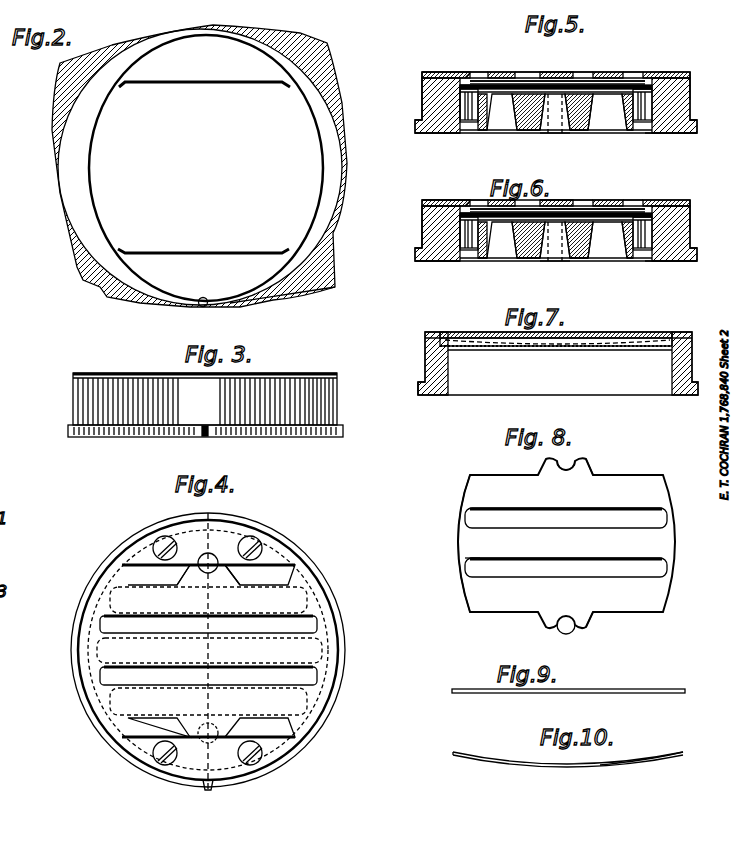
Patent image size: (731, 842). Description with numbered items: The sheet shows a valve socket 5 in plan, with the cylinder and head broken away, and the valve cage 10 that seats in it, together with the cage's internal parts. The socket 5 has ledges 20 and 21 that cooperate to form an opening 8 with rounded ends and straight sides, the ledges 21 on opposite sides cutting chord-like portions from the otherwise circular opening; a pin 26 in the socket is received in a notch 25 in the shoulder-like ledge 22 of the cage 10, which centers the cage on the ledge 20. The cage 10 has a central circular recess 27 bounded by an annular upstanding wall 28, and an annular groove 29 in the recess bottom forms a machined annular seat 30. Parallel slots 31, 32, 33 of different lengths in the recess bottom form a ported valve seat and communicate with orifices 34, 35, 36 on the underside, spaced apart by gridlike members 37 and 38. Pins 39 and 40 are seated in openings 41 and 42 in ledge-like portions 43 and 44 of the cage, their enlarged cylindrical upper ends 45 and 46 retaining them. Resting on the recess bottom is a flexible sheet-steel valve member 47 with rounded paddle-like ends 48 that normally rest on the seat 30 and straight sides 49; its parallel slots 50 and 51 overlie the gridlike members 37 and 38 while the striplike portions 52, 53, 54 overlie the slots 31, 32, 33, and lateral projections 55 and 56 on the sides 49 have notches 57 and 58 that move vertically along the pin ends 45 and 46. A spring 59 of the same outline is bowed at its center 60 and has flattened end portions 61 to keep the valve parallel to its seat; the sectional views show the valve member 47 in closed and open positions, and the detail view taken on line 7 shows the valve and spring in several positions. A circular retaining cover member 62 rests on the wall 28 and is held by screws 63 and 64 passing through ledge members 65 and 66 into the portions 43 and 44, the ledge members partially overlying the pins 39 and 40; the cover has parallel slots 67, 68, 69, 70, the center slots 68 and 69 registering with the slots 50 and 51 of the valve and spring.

In FIG. 2, the valve socket 5 is at (105, 295).
In FIG. 4, the valve socket 5 is at (208, 653).
In FIG. 5, the section line 7 is at (527, 72).
In FIG. 2, the opening 8 is at (130, 205).
In FIG. 3, the valve carrying element or cage 10 is at (340, 397).
In FIG. 5, the valve carrying element or cage 10 is at (422, 96).
In FIG. 6, the valve carrying element or cage 10 is at (422, 228).
In FIG. 7, the valve carrying element or cage 10 is at (425, 366).
In FIG. 2, the ledge 20 is at (320, 215).
In FIG. 2, the ledge 21 is at (255, 275).
In FIG. 3, the shoulder-like ledge 22 is at (345, 430).
In FIG. 7, the shoulder-like ledge 22 is at (418, 396).
In FIG. 3, the notch 25 is at (207, 437).
In FIG. 4, the notch 25 is at (214, 783).
In FIG. 2, the pin 26 is at (199, 306).
In FIG. 5, the central circular recess 27 is at (440, 73).
In FIG. 6, the central circular recess 27 is at (435, 205).
In FIG. 5, the annular upstanding wall 28 is at (690, 80).
In FIG. 6, the annular upstanding wall 28 is at (690, 215).
In FIG. 5, the annular groove 29 is at (690, 72).
In FIG. 6, the annular groove 29 is at (688, 200).
In FIG. 5, the annular seat 30 is at (462, 78).
In FIG. 6, the annular seat 30 is at (455, 208).
In FIG. 7, the annular seat 30 is at (430, 345).
In FIG. 5, the slot 31 is at (502, 112).
In FIG. 6, the slot 31 is at (502, 240).
In FIG. 5, the slot 32 is at (555, 112).
In FIG. 6, the slot 32 is at (555, 240).
In FIG. 5, the slot 33 is at (607, 112).
In FIG. 6, the slot 33 is at (607, 240).
In FIG. 5, the orifice 34 is at (486, 132).
In FIG. 6, the orifice 34 is at (490, 262).
In FIG. 5, the orifice 35 is at (548, 136).
In FIG. 6, the orifice 35 is at (555, 263).
In FIG. 5, the orifice 36 is at (610, 132).
In FIG. 6, the orifice 36 is at (605, 262).
In FIG. 5, the gridlike member 37 is at (530, 132).
In FIG. 6, the gridlike member 37 is at (535, 263).
In FIG. 5, the gridlike member 38 is at (578, 132).
In FIG. 6, the gridlike member 38 is at (580, 263).
In FIG. 5, the pin 39 is at (432, 136).
In FIG. 6, the pin 39 is at (468, 264).
In FIG. 5, the pin 40 is at (645, 132).
In FIG. 6, the pin 40 is at (650, 262).
In FIG. 5, the vertically disposed recess or opening 41 is at (470, 132).
In FIG. 6, the vertically disposed recess or opening 41 is at (478, 262).
In FIG. 5, the vertically disposed recess or opening 42 is at (640, 136).
In FIG. 6, the vertically disposed recess or opening 42 is at (640, 264).
In FIG. 5, the ledge-like portion 43 is at (430, 125).
In FIG. 6, the ledge-like portion 43 is at (440, 263).
In FIG. 5, the ledge-like portion 44 is at (692, 126).
In FIG. 6, the ledge-like portion 44 is at (690, 262).
In FIG. 4, the enlarged cylindrical upper end 45 is at (205, 745).
In FIG. 5, the enlarged cylindrical upper end 45 is at (440, 100).
In FIG. 6, the enlarged cylindrical upper end 45 is at (440, 228).
In FIG. 4, the enlarged cylindrical upper end 46 is at (200, 560).
In FIG. 5, the enlarged cylindrical upper end 46 is at (640, 84).
In FIG. 6, the enlarged cylindrical upper end 46 is at (645, 212).
In FIG. 5, the valve member 47 is at (512, 105).
In FIG. 6, the valve member 47 is at (505, 235).
In FIG. 7, the valve member 47 is at (468, 346).
In FIG. 8, the valve member 47 is at (470, 605).
In FIG. 9, the valve member 47 is at (612, 688).
In FIG. 8, the rounded paddle-like end 48 is at (455, 545).
In FIG. 8, the straight side 49 is at (650, 476).
In FIG. 8, the slot 50 is at (468, 518).
In FIG. 8, the slot 51 is at (482, 570).
In FIG. 8, the striplike portion 52 is at (495, 490).
In FIG. 8, the striplike portion 53 is at (490, 545).
In FIG. 8, the striplike portion 54 is at (520, 600).
In FIG. 4, the lateral projection 55 is at (237, 576).
In FIG. 8, the lateral projection 55 is at (595, 474).
In FIG. 8, the lateral projection 56 is at (600, 616).
In FIG. 8, the notch 57 is at (570, 463).
In FIG. 8, the notch 58 is at (570, 626).
In FIG. 7, the spring 59 is at (645, 346).
In FIG. 10, the spring 59 is at (503, 756).
In FIG. 10, the bowed center 60 is at (590, 762).
In FIG. 10, the flattened end portion 61 is at (470, 742).
In FIG. 3, the retaining cover member or abutment 62 is at (304, 372).
In FIG. 5, the retaining cover member or abutment 62 is at (420, 76).
In FIG. 7, the retaining cover member or abutment 62 is at (680, 332).
In FIG. 4, the screw 63 is at (153, 545).
In FIG. 5, the screw 63 is at (466, 76).
In FIG. 6, the screw 63 is at (428, 213).
In FIG. 4, the screw 64 is at (160, 760).
In FIG. 5, the screw 64 is at (665, 72).
In FIG. 4, the ledge member 65 is at (217, 540).
In FIG. 4, the ledge member 66 is at (185, 738).
In FIG. 4, the slot 67 is at (276, 570).
In FIG. 5, the slot 67 is at (604, 73).
In FIG. 6, the slot 67 is at (615, 198).
In FIG. 4, the slot 68 is at (312, 626).
In FIG. 5, the slot 68 is at (583, 74).
In FIG. 6, the slot 68 is at (565, 205).
In FIG. 4, the slot 69 is at (320, 676).
In FIG. 5, the slot 69 is at (538, 72).
In FIG. 6, the slot 69 is at (545, 200).
In FIG. 4, the slot 70 is at (290, 726).
In FIG. 5, the slot 70 is at (480, 73).
In FIG. 6, the slot 70 is at (478, 202).